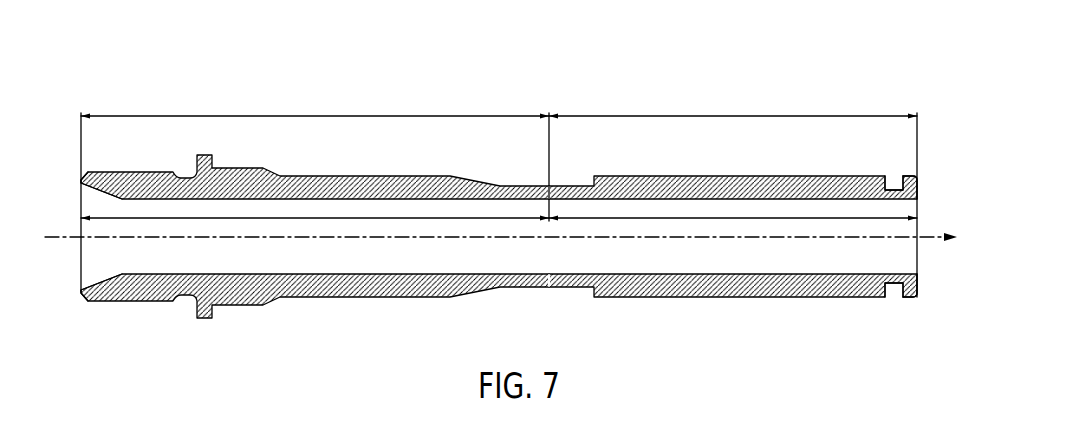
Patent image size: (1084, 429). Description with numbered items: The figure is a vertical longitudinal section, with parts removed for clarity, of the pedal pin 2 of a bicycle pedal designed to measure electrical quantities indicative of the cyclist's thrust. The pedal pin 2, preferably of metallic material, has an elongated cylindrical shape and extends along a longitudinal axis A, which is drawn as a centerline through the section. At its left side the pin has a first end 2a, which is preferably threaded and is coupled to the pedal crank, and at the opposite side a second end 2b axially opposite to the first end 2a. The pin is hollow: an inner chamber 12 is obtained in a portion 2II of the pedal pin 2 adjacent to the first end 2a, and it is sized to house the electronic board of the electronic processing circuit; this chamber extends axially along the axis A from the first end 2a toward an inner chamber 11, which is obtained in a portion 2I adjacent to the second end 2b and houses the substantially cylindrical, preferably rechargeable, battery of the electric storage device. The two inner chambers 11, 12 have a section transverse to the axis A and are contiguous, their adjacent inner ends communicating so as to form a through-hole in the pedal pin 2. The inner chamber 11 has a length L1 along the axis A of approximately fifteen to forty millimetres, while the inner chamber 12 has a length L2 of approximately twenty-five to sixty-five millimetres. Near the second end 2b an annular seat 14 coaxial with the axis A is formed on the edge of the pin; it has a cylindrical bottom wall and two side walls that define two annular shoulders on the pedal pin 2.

The pedal pin 2 is at (502, 252).
The first end 2a is at (78, 303).
The second end 2b is at (928, 176).
The inner chamber 11 is at (760, 273).
The inner chamber 12 is at (391, 272).
The annular seat 14 is at (893, 188).
The length of the inner chamber L1 is at (698, 218).
The length of the inner chamber L2 is at (345, 218).
The longitudinal axis A is at (932, 244).
The portion of the pedal pin 2I is at (733, 106).
The portion of the pedal pin 2II is at (315, 105).